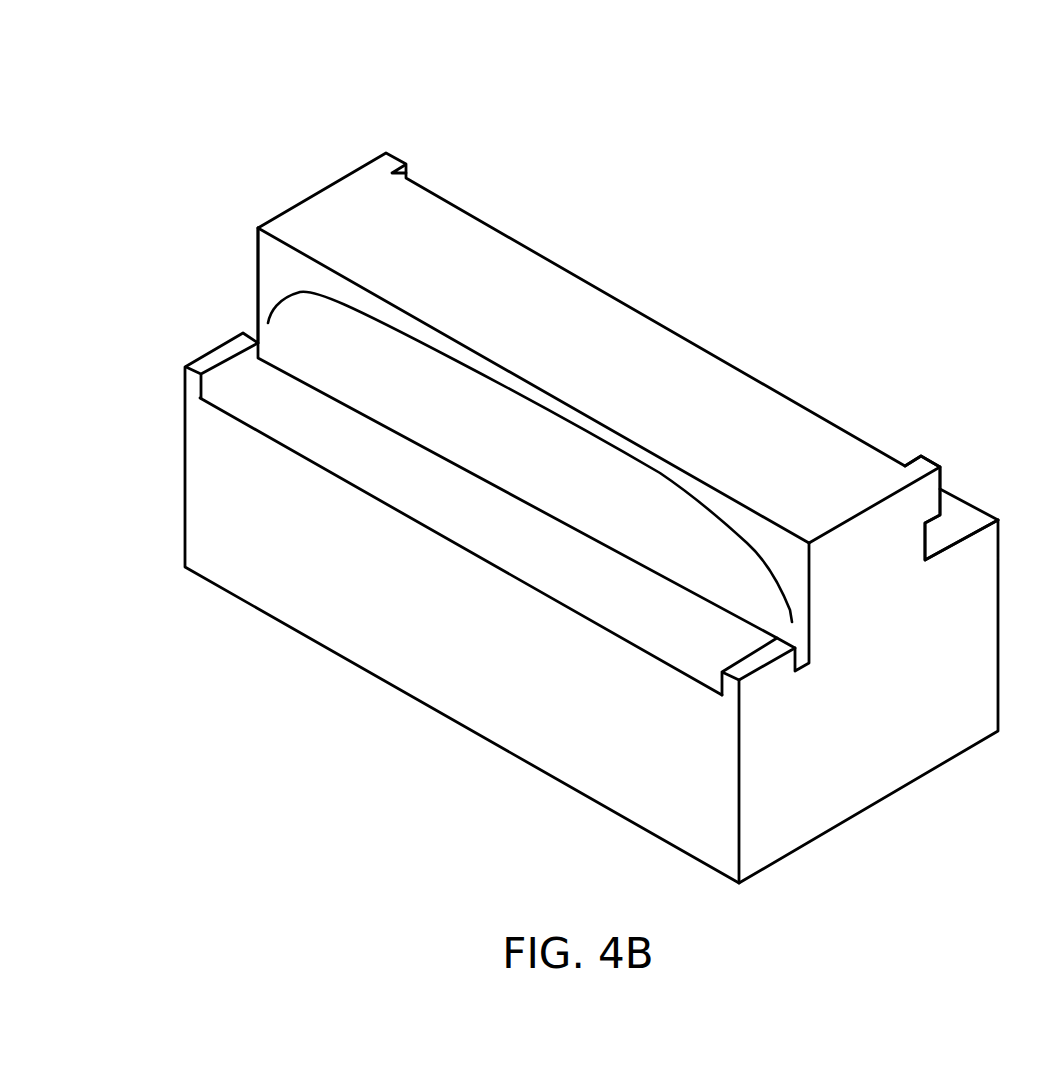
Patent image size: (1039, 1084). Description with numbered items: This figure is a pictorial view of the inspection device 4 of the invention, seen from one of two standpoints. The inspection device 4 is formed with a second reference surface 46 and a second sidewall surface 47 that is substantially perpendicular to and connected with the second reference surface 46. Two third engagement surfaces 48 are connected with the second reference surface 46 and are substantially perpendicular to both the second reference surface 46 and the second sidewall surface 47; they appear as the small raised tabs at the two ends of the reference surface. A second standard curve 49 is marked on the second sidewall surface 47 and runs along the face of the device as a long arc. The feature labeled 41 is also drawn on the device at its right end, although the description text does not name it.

The inspection device 4 is at (640, 102).
The notch 41 is at (952, 511).
The second reference surface 46 is at (466, 526).
The second sidewall surface 47 is at (273, 264).
The third engagement surfaces 48 is at (222, 373).
The second standard curve 49 is at (362, 312).